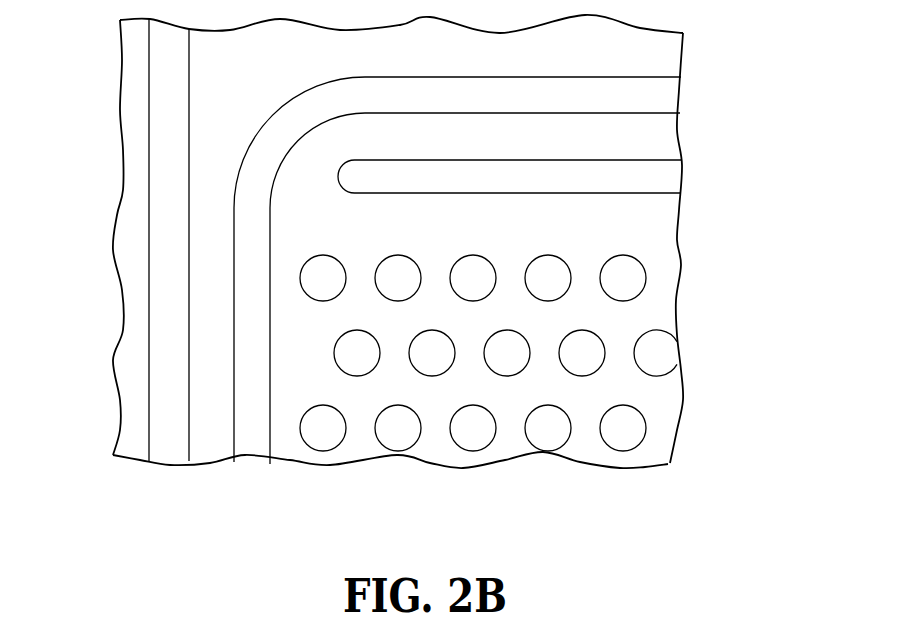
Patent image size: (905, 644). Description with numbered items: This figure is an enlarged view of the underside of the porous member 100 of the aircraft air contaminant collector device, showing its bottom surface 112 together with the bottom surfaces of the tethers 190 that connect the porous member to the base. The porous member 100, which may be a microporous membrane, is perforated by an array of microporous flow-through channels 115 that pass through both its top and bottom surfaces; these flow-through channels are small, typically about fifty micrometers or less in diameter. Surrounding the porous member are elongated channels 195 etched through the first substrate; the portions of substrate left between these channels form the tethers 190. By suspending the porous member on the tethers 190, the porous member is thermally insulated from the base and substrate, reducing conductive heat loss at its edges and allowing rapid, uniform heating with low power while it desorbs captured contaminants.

The porous member 100 is at (686, 234).
The bottom surface 112 is at (623, 225).
The microporous flow-through channels 115 is at (622, 428).
The tethers 190 is at (205, 213).
The channels 195 is at (252, 342).